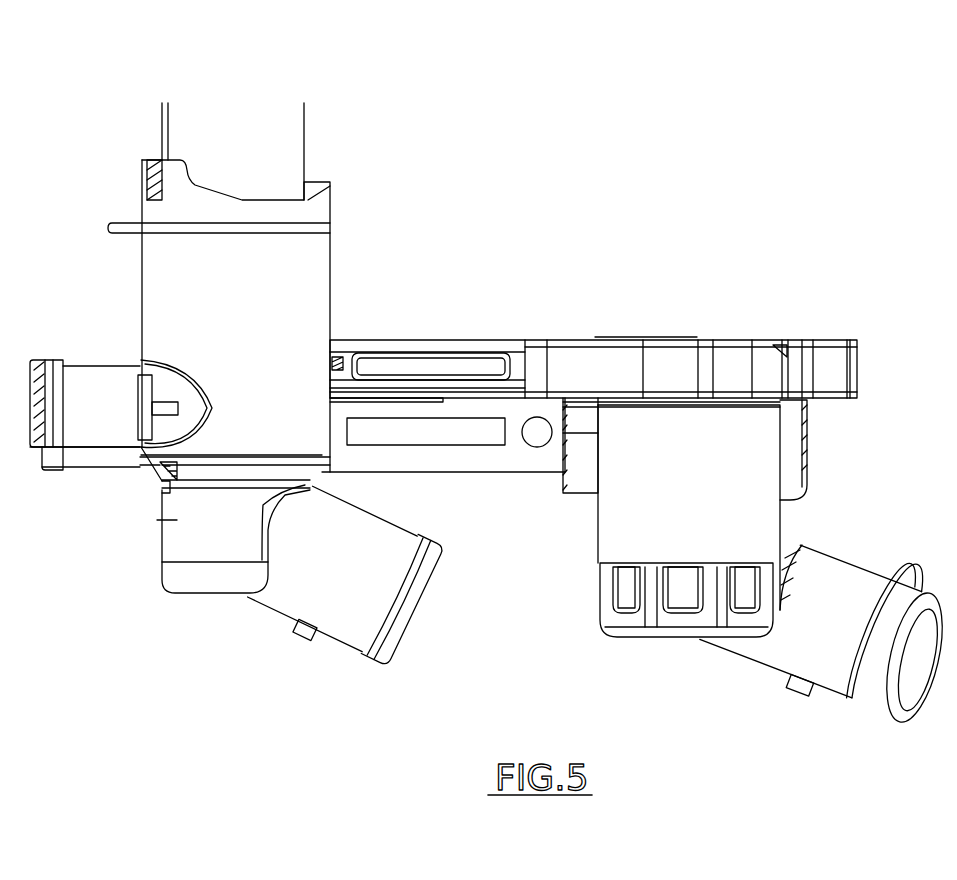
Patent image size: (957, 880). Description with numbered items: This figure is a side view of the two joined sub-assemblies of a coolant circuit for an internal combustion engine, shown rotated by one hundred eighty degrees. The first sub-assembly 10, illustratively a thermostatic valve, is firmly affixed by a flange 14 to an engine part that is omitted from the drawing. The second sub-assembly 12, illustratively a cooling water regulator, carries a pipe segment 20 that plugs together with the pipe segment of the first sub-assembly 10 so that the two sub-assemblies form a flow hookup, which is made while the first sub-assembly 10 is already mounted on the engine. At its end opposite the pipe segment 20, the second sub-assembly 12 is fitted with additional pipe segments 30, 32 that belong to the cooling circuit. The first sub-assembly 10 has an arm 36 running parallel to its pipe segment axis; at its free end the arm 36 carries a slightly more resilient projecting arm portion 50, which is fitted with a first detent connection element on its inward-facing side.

The first sub-assembly 10 is at (817, 518).
The second sub-assembly 12 is at (348, 262).
The flange 14 is at (830, 360).
The pipe segment 20 is at (525, 460).
The additional pipe segment 30 is at (98, 457).
The additional pipe segment 32 is at (73, 373).
The arm 36 is at (460, 340).
The projecting arm portion 50 is at (350, 333).